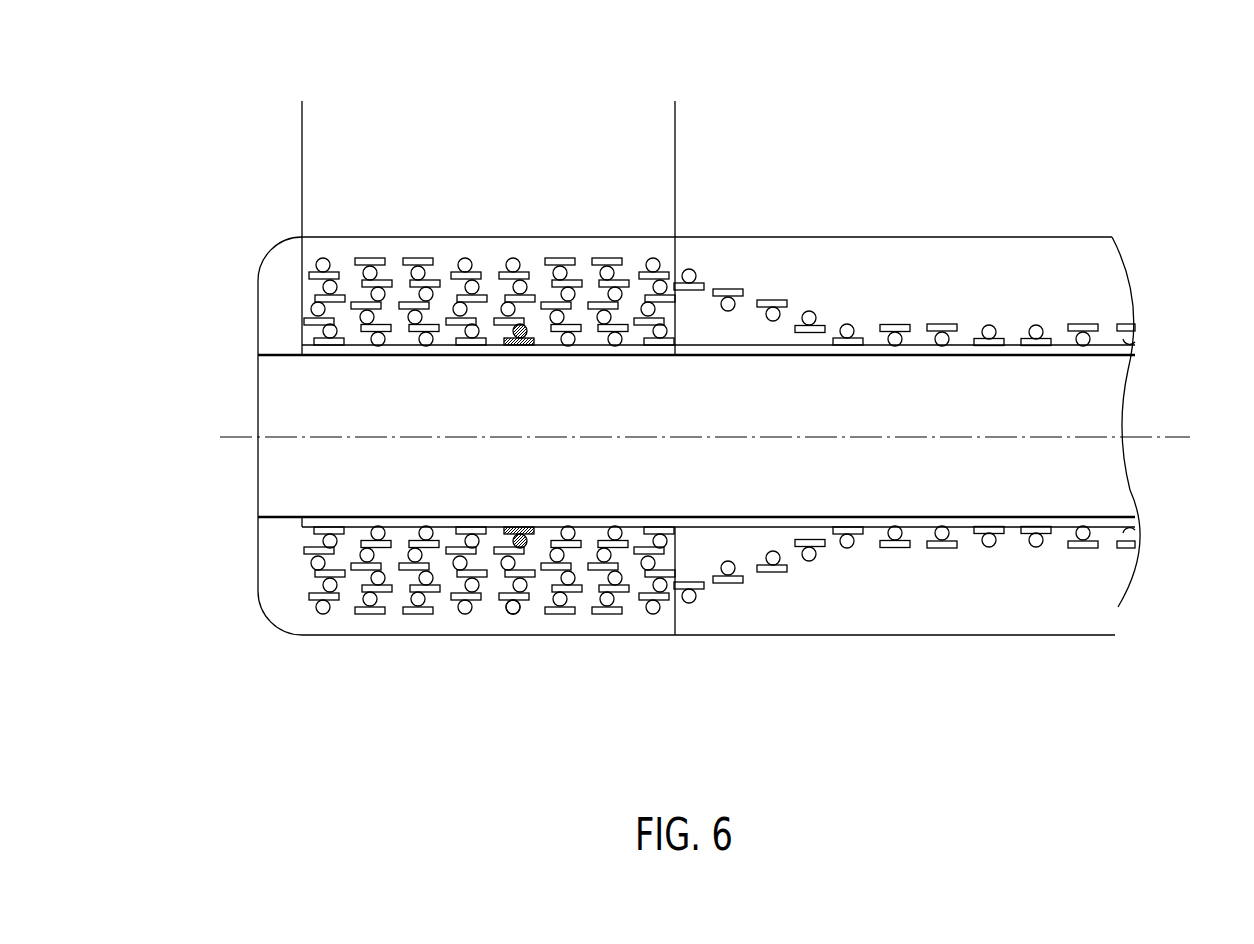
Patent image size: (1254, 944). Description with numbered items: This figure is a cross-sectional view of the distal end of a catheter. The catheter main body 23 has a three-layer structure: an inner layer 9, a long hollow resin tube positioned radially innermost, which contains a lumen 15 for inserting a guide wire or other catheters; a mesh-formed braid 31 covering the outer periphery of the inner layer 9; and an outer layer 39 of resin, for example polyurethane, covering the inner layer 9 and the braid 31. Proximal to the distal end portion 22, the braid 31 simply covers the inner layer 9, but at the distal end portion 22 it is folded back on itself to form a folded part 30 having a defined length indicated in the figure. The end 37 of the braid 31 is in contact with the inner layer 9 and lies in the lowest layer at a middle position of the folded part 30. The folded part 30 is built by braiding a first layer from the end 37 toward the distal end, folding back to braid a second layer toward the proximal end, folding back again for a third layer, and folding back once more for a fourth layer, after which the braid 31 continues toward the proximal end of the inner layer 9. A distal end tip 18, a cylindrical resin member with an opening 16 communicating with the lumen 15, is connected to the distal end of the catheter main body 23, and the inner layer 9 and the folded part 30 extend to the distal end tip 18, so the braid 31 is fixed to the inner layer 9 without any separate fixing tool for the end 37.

The inner layer 9 is at (1083, 357).
The lumen 15 is at (962, 475).
The opening 16 is at (298, 460).
The distal end tip 18 is at (402, 622).
The distal end portion 22 is at (324, 634).
The catheter main body 23 is at (789, 199).
The folded part 30 is at (302, 136).
The braid 31 is at (512, 612).
The end of the braid 37 is at (530, 345).
The outer layer 39 is at (947, 288).